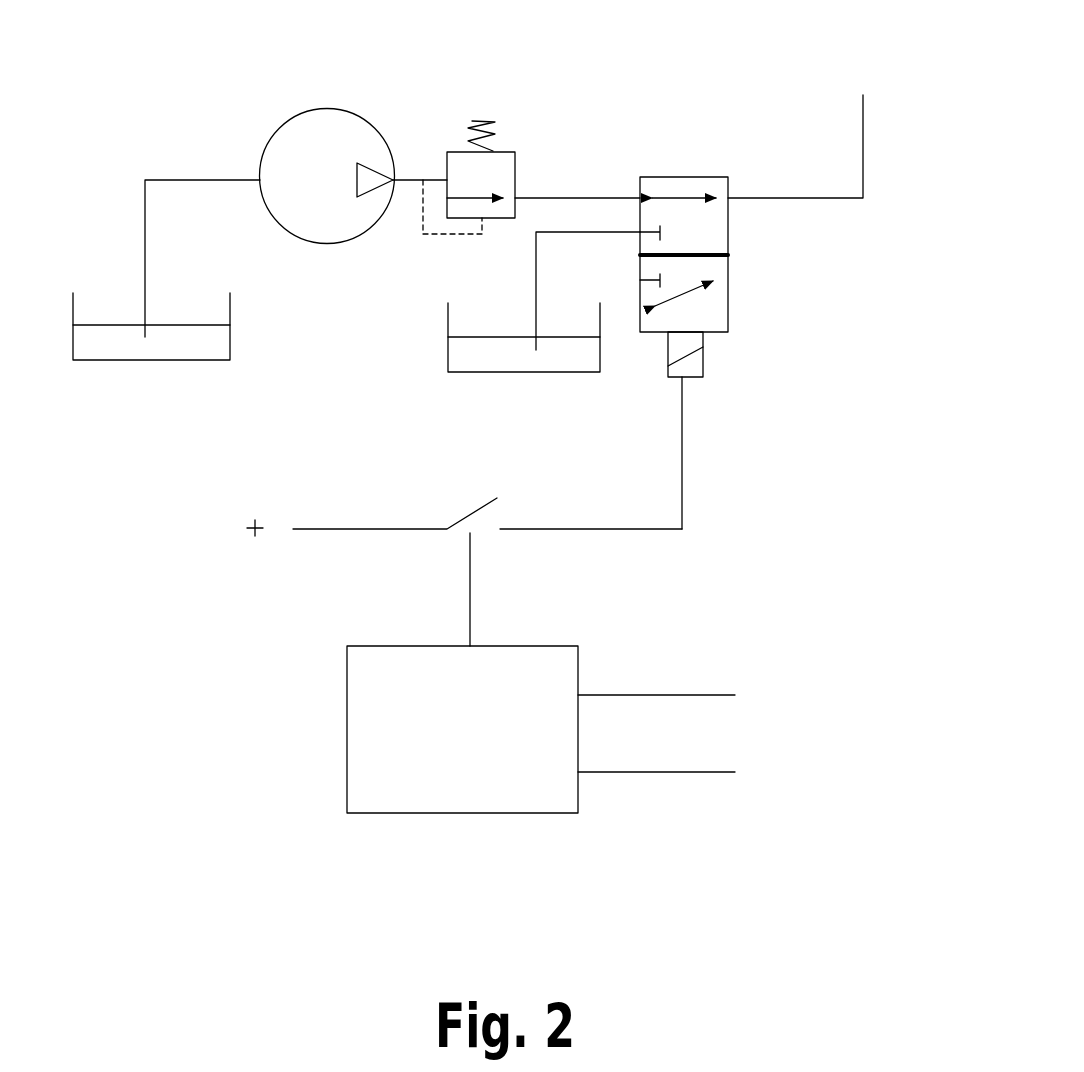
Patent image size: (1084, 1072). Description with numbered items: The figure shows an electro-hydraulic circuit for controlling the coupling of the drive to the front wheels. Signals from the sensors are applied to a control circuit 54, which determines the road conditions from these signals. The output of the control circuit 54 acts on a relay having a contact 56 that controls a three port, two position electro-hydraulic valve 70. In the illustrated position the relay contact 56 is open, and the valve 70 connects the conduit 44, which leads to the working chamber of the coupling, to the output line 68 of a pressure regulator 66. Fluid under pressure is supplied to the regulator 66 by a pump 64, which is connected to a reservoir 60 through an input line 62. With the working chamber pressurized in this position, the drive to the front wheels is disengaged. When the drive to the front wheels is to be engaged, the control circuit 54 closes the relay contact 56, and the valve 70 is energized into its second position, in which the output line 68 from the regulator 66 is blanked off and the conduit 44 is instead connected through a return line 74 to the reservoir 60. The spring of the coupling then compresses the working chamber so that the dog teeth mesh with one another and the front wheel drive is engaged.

The conduit 44 is at (823, 198).
The control circuit 54 is at (448, 792).
The relay contact 56 is at (475, 513).
The reservoir 60 is at (197, 350).
The input line 62 is at (183, 180).
The pump 64 is at (337, 128).
The pressure regulator 66 is at (507, 163).
The output line 68 is at (575, 198).
The electro-hydraulic valve 70 is at (703, 180).
The return line 74 is at (536, 303).